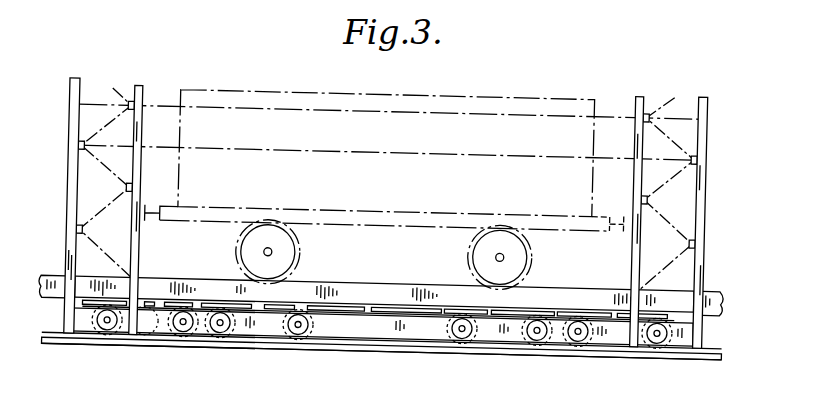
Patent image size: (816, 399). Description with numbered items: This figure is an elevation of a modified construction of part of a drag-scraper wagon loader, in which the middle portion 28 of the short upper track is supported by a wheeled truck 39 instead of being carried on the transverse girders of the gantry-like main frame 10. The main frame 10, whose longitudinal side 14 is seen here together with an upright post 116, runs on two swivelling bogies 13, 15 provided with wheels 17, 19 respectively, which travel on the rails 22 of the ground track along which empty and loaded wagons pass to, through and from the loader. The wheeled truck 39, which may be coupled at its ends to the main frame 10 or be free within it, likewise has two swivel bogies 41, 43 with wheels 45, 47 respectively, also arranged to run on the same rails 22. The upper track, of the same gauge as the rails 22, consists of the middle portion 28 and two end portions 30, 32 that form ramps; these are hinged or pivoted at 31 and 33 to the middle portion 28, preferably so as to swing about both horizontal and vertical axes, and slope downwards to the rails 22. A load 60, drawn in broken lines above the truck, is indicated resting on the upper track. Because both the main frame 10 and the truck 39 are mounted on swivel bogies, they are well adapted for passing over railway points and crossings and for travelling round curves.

The main frame 10 is at (66, 105).
The inner upright post 116 is at (156, 100).
The load (pipe bundle) 60 is at (488, 87).
The swivelling bogie 13 is at (161, 310).
The middle portion of the upper track 28 is at (374, 275).
The swivelling bogie 15 is at (619, 304).
The hinge 31 is at (706, 284).
The hinge 33 is at (74, 270).
The end portion of the upper track 32 is at (52, 300).
The rails 22 is at (106, 338).
The wheels 17 is at (175, 337).
The wheels 45 is at (226, 331).
The swivel bogie 41 is at (283, 306).
The wheeled truck 39 is at (335, 307).
The longitudinal side 14 is at (406, 331).
The wheels 47 is at (467, 326).
The swivel bogie 43 is at (492, 306).
The wheels 19 is at (655, 338).
The end portion of the upper track 30 is at (733, 302).